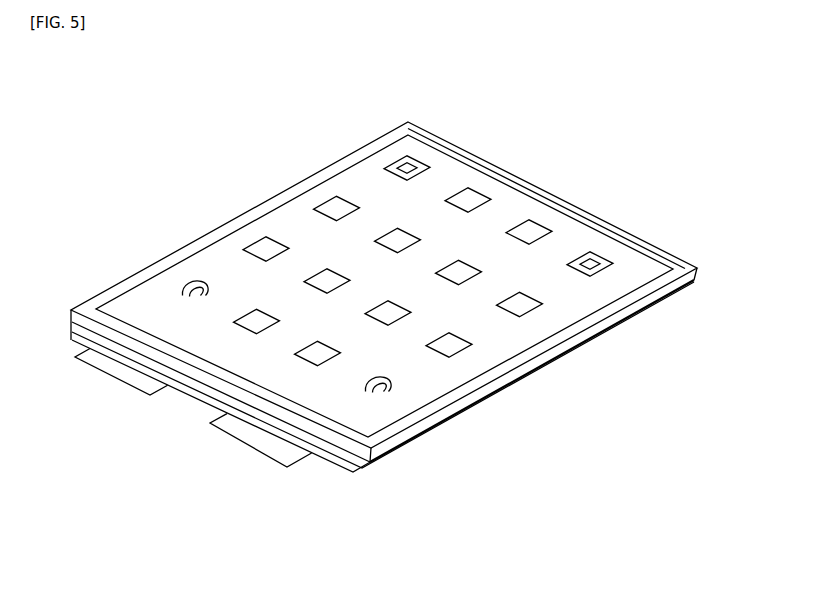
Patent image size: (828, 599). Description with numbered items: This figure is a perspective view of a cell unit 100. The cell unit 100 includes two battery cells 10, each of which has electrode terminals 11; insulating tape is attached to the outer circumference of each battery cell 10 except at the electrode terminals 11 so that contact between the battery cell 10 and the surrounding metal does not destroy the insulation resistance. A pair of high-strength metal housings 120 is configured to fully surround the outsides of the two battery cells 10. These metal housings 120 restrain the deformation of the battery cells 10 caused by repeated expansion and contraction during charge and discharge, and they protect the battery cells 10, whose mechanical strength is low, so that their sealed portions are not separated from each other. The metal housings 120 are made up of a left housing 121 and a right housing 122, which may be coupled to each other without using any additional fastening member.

The cell unit 100 is at (102, 140).
The battery cell 10 is at (370, 462).
The electrode terminal 11 is at (110, 357).
The metal housing 120 is at (440, 168).
The left housing 121 is at (510, 332).
The right housing 122 is at (620, 322).